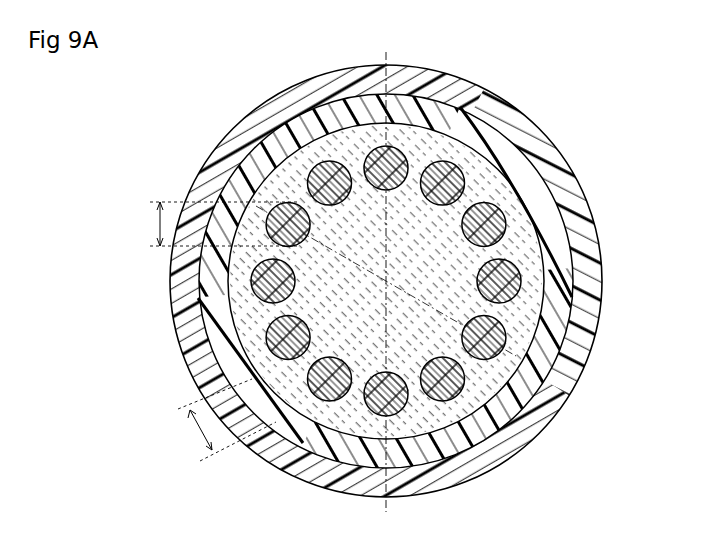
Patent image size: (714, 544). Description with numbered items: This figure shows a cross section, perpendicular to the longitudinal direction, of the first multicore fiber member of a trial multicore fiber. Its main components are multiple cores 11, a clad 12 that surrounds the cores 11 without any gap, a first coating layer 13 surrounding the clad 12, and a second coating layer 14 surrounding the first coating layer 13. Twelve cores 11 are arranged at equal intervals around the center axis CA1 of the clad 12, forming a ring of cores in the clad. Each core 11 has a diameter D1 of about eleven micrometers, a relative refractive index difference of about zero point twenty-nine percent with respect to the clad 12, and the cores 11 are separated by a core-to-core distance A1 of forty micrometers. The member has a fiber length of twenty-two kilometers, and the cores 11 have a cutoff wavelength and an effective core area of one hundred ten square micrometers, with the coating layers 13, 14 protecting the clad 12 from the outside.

The cores 11 is at (278, 482).
The clad 12 is at (522, 186).
The first coating layer 13 is at (543, 173).
The second coating layer 14 is at (563, 190).
The center axis CA1 is at (386, 288).
The diameter D1 is at (158, 224).
The core-to-core distance A1 is at (205, 432).